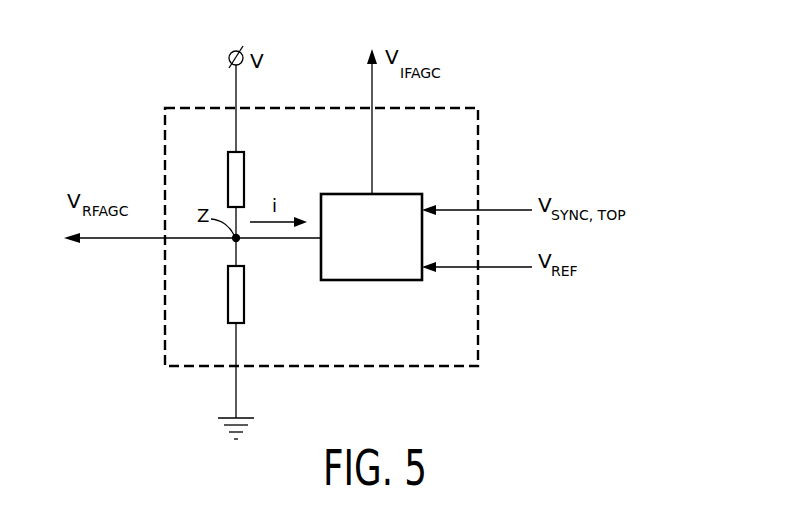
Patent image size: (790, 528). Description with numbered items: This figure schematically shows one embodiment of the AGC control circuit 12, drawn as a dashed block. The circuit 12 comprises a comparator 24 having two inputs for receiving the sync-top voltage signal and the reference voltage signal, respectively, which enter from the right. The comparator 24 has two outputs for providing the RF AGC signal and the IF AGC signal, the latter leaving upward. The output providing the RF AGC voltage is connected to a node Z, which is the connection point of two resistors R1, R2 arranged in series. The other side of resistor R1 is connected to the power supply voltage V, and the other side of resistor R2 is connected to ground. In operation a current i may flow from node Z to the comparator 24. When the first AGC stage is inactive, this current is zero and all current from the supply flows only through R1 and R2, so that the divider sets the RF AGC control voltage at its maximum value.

The AGC control circuit 12 is at (160, 150).
The comparator 24 is at (382, 282).
The resistor R1 is at (228, 180).
The resistor R2 is at (228, 298).